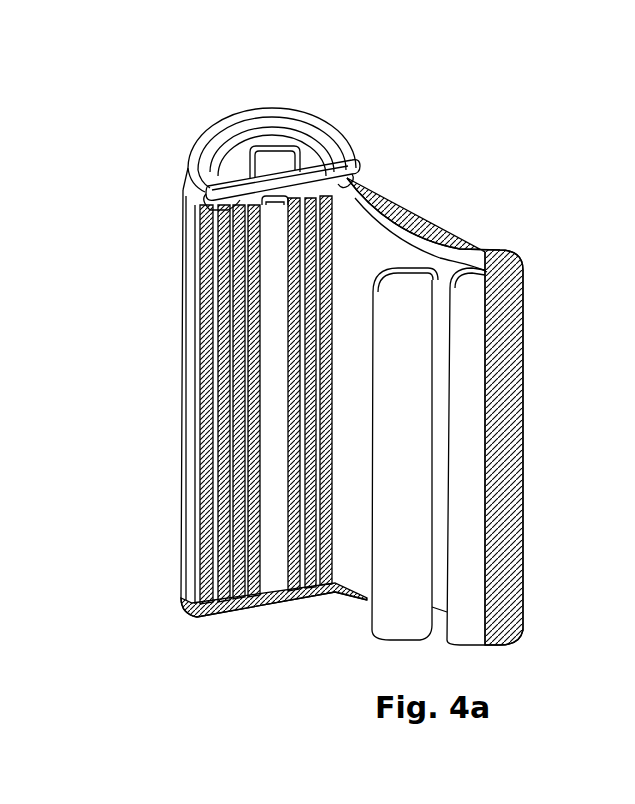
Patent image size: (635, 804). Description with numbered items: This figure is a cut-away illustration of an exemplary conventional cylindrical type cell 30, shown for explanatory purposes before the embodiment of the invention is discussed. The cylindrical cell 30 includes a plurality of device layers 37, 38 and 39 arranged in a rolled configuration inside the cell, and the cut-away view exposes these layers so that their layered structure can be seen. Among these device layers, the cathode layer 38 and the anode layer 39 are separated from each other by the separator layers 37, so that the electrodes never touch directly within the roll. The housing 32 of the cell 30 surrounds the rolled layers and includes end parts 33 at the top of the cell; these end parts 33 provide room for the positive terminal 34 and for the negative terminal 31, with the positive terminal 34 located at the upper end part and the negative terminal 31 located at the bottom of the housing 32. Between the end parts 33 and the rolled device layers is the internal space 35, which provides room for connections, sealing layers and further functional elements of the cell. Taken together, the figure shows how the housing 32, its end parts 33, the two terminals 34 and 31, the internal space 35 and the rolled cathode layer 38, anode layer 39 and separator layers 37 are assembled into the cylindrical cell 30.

The cylindrical type cell 30 is at (178, 287).
The negative terminal 31 is at (274, 616).
The housing 32 is at (188, 371).
The end parts 33 is at (218, 148).
The positive terminal 34 is at (275, 147).
The internal space 35 is at (222, 204).
The separator layers 37 is at (468, 421).
The cathode layer 38 is at (402, 528).
The anode layer 39 is at (508, 327).